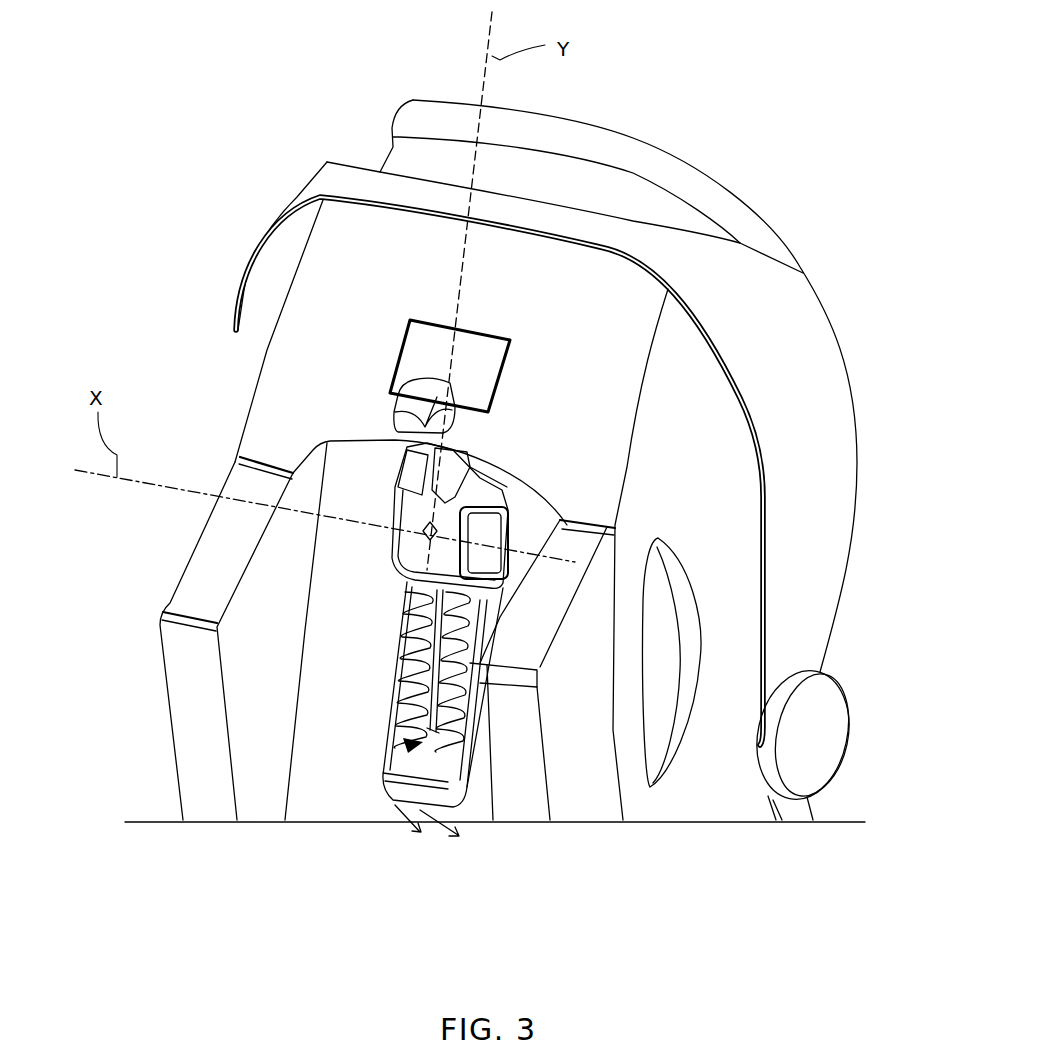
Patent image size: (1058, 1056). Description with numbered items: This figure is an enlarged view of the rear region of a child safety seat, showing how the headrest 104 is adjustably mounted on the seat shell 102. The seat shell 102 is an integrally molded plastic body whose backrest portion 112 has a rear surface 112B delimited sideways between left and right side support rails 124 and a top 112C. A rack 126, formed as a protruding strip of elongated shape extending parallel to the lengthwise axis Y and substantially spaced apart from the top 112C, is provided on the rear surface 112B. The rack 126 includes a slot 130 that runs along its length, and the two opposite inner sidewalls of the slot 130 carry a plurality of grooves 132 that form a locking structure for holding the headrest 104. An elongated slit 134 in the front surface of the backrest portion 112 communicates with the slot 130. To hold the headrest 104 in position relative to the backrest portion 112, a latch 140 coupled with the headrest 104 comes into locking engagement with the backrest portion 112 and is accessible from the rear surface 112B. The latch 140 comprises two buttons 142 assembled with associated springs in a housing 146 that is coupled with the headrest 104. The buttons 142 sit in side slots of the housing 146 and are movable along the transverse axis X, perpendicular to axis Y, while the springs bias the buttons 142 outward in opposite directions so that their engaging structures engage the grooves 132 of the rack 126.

The seat shell 102 is at (810, 397).
The headrest 104 is at (637, 153).
The backrest portion 112 is at (285, 322).
The rear surface 112B is at (337, 553).
The top 112C is at (347, 187).
The side support rails 124 is at (213, 807).
The rack 126 is at (433, 787).
The slot 130 is at (405, 747).
The grooves 132 is at (400, 680).
The elongated slit 134 is at (410, 643).
The latch 140 is at (538, 497).
The buttons 142 is at (297, 463).
The housing 146 is at (415, 563).